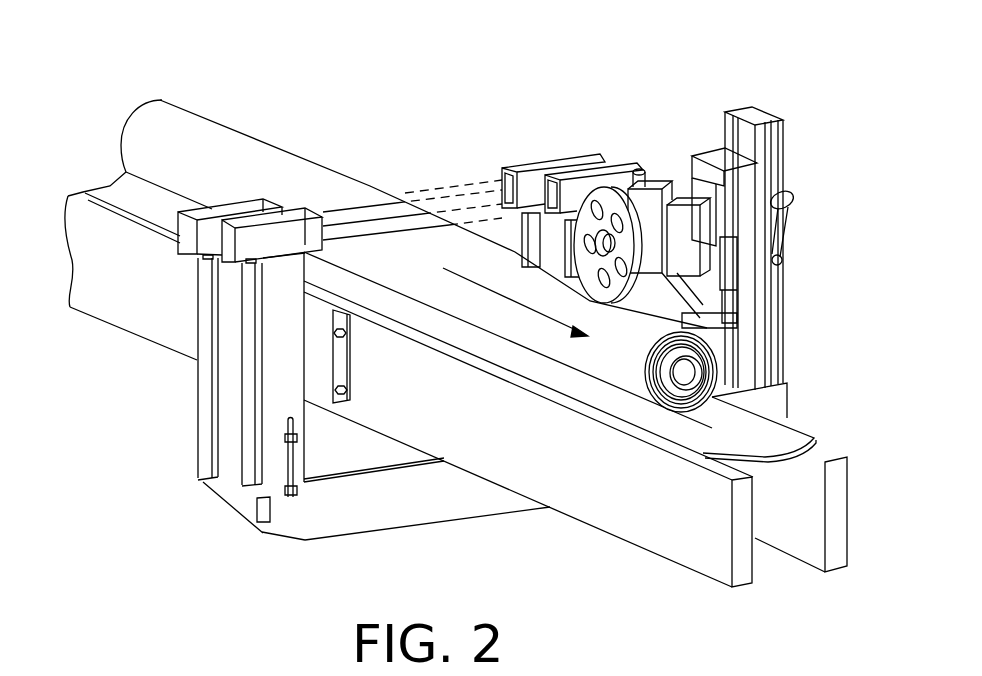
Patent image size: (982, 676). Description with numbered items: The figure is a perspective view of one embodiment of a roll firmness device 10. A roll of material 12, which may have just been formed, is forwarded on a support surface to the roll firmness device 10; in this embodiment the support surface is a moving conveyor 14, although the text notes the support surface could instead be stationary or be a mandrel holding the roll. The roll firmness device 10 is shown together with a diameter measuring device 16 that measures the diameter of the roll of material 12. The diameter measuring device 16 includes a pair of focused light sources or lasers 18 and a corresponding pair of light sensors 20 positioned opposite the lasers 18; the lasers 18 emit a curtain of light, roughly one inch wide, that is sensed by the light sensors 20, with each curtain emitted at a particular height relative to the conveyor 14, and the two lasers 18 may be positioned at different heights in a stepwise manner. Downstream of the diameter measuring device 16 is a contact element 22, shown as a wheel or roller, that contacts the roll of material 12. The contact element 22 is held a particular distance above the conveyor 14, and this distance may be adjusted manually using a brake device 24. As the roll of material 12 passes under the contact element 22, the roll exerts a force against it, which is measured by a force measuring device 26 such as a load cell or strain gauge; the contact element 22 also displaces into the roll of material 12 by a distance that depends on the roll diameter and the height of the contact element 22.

The roll firmness device 10 is at (648, 76).
The roll of material 12 is at (193, 127).
The moving conveyor 14 is at (790, 438).
The diameter measuring device 16 is at (522, 153).
The lasers 18 is at (588, 153).
The light sensors 20 is at (198, 240).
The contact element 22 is at (607, 197).
The brake device 24 is at (792, 200).
The force measuring device 26 is at (652, 205).